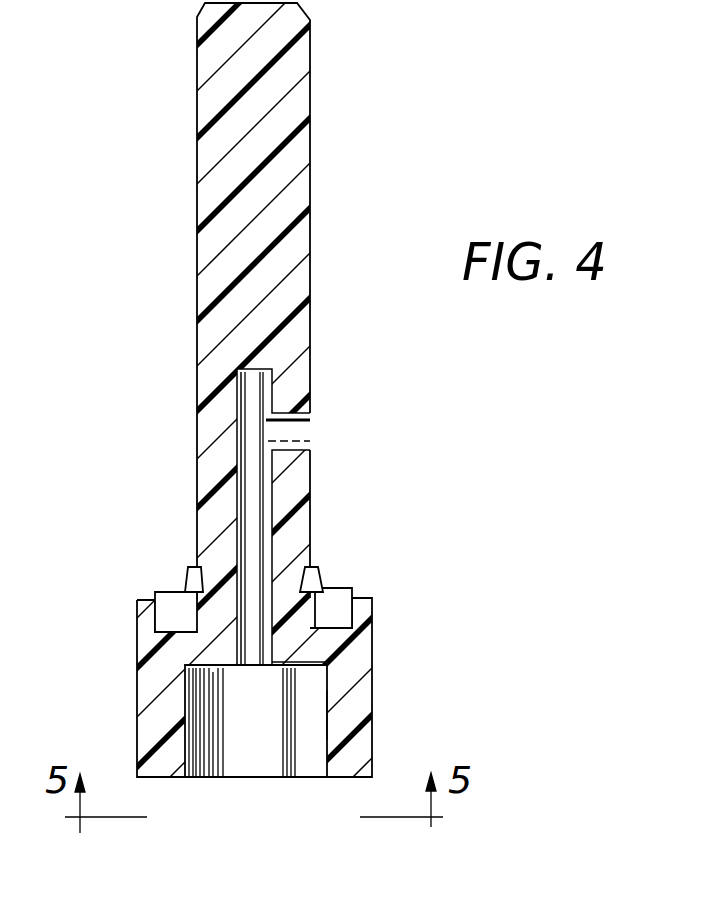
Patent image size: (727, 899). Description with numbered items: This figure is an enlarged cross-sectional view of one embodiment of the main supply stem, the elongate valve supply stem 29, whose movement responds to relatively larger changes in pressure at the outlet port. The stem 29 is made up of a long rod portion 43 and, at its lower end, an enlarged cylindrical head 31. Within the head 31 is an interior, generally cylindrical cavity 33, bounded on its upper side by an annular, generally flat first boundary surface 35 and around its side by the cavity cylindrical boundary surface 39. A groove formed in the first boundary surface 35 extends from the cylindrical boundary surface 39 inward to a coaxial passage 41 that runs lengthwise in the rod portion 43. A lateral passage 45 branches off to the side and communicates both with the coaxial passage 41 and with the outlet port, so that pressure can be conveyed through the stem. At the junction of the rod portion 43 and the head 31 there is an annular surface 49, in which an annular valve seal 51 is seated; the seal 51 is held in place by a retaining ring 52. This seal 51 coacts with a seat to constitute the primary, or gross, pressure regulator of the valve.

The valve supply stem 29 is at (363, 449).
The rod portion 43 is at (311, 193).
The lateral passage 45 is at (292, 430).
The coaxial passage 41 is at (257, 488).
The retaining ring 52 is at (190, 577).
The annular valve seal 51 is at (340, 587).
The annular surface 49 is at (362, 598).
The cylindrical head 31 is at (137, 650).
The first boundary surface 35 is at (212, 687).
The cavity cylindrical boundary surface 39 is at (323, 737).
The cylindrical cavity 33 is at (240, 753).